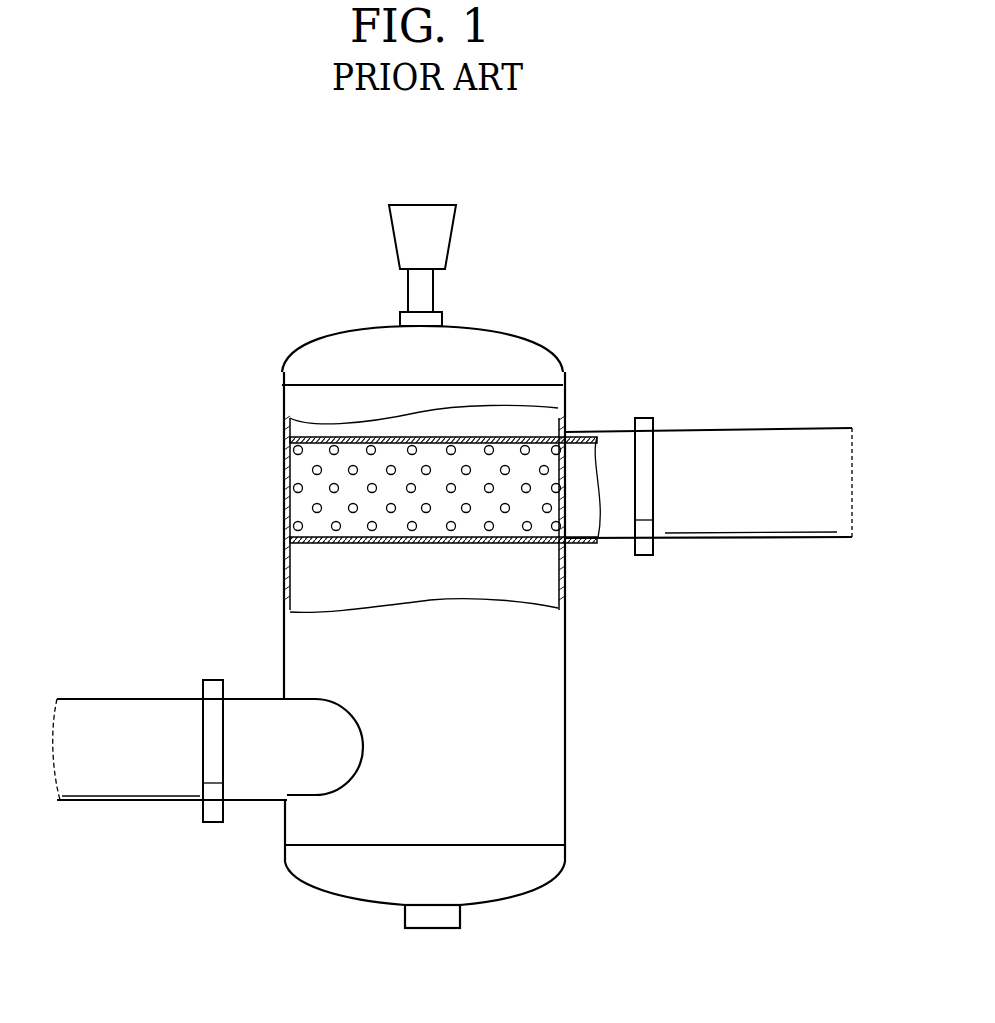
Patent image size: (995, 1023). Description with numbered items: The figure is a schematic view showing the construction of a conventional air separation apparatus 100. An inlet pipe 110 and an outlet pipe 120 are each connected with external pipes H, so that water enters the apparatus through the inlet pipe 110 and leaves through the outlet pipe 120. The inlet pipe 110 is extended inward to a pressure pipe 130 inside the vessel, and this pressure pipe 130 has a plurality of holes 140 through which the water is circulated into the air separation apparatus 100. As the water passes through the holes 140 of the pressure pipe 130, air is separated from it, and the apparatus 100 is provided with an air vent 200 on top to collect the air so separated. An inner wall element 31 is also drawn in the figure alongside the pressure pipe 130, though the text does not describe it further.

The air separation apparatus 100 is at (528, 322).
The air vent 200 is at (387, 231).
The inlet pipe 110 is at (643, 450).
The outlet pipe 120 is at (215, 765).
The pressure pipe 130 is at (334, 545).
The holes 140 is at (312, 471).
The inner liner wall 31 is at (565, 580).
The pipe H is at (760, 510).